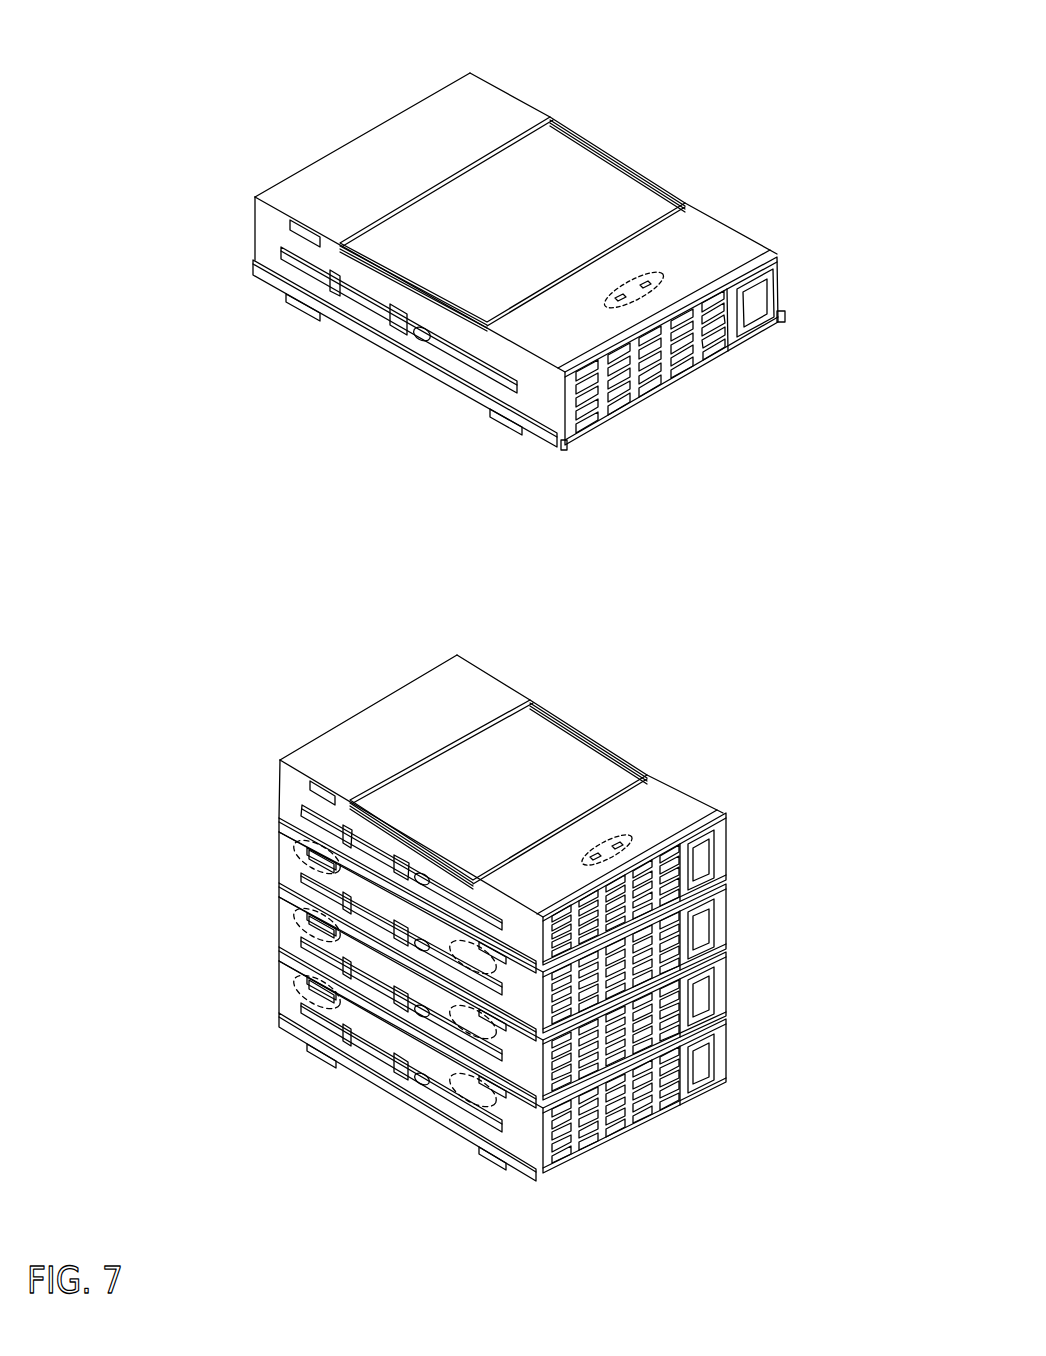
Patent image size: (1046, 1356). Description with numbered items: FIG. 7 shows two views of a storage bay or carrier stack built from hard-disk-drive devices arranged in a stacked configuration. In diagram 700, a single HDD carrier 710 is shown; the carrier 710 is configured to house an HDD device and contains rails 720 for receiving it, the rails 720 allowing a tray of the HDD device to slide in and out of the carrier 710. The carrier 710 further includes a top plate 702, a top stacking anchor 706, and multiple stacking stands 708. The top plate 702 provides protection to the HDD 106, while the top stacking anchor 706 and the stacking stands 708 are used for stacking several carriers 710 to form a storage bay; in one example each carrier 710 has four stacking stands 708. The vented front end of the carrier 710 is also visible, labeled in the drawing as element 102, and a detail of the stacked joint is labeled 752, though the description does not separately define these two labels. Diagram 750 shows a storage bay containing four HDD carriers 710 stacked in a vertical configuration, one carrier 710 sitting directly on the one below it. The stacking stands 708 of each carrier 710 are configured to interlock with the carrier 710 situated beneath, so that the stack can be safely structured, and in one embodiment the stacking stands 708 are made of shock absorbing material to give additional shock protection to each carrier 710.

The diagram 700 is at (626, 46).
The top plate 702 is at (293, 202).
The HDD 106 is at (548, 228).
The top stacking anchor 706 is at (638, 298).
The housing front 102 is at (780, 295).
The rails 720 is at (784, 317).
The stacking stands 708 is at (317, 318).
The HDD carrier 710 is at (455, 562).
The diagram 750 is at (644, 680).
The interlock feature 752 is at (288, 915).